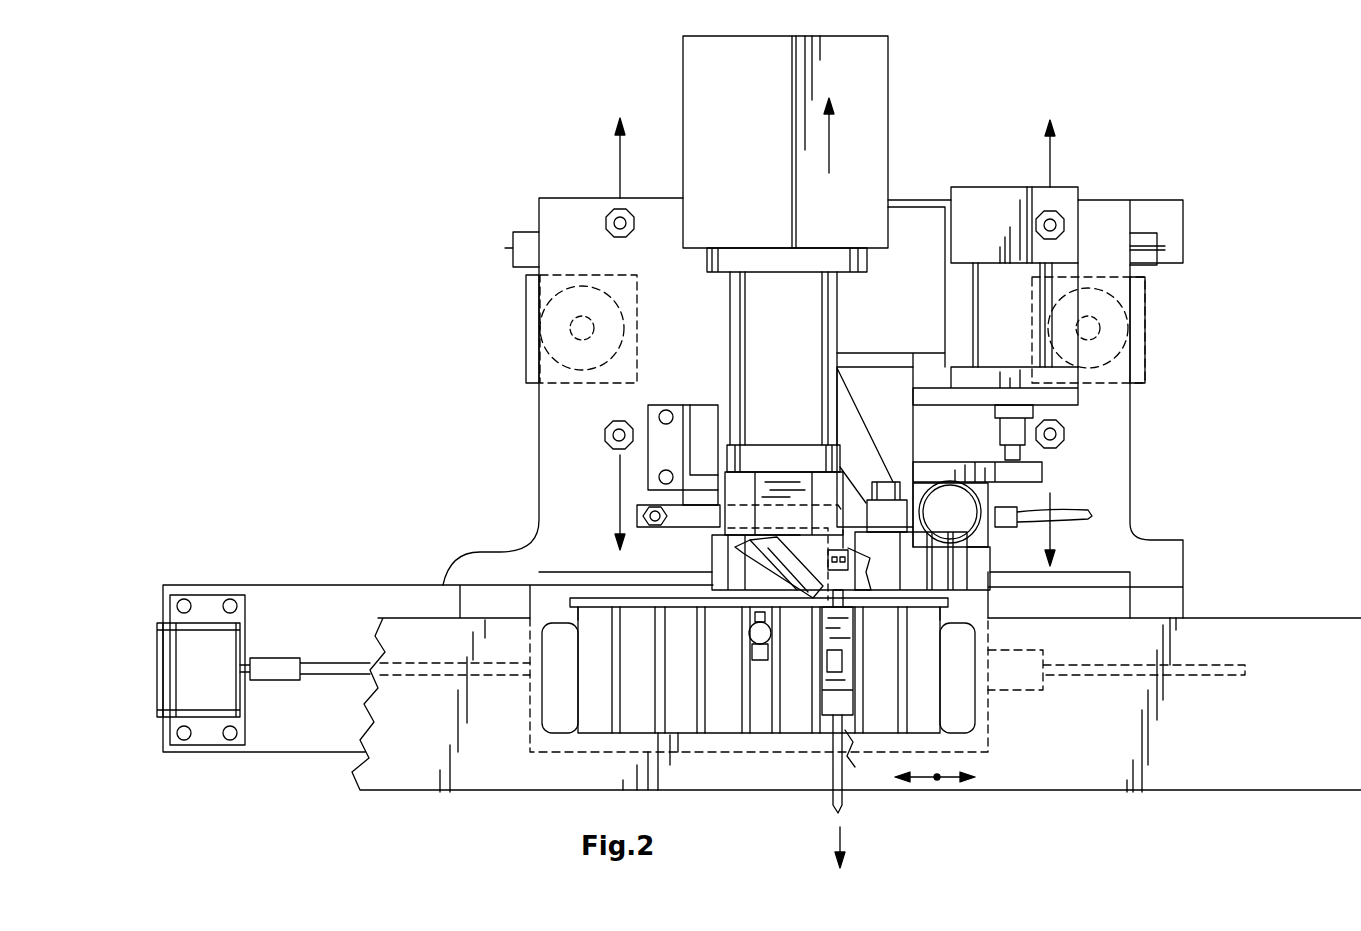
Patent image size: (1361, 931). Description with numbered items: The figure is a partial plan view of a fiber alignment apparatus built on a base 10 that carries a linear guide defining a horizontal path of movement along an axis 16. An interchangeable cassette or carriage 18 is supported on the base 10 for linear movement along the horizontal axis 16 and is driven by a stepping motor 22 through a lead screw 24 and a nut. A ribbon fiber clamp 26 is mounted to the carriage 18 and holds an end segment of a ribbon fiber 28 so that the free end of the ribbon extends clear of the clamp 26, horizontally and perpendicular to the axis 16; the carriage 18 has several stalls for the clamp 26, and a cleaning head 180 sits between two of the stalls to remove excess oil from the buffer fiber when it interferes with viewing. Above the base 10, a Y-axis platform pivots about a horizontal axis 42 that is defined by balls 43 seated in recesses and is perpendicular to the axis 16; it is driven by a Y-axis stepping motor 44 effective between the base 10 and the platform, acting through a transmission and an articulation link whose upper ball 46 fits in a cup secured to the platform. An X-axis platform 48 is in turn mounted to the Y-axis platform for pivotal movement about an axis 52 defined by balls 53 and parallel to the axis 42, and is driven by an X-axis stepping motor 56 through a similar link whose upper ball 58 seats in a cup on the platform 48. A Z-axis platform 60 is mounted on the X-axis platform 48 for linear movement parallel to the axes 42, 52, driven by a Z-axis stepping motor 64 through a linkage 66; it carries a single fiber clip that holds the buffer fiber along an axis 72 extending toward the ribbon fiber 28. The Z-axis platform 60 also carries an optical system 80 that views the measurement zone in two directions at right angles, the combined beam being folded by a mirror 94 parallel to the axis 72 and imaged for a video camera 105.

The base 10 is at (338, 588).
The axis 16 is at (950, 777).
The carriage 18 is at (960, 717).
The stepping motor 22 is at (178, 661).
The lead screw 24 is at (343, 662).
The ribbon fiber clamp 26 is at (832, 695).
The ribbon fiber 28 is at (828, 798).
The horizontal axis 42 is at (618, 163).
The balls 43 is at (628, 223).
The Y-axis stepping motor 44 is at (1147, 367).
The second ball 46 is at (1100, 328).
The X-axis platform 48 is at (1118, 415).
The axis 52 is at (1052, 158).
The balls 53 is at (1038, 225).
The X-axis stepping motor 56 is at (530, 354).
The second ball 58 is at (570, 328).
The Z-axis platform 60 is at (698, 388).
The Z-axis stepping motor 64 is at (993, 187).
The linkage 66 is at (866, 437).
The axis 72 is at (829, 145).
The optical system 80 is at (700, 543).
The mirror 94 is at (783, 590).
The video camera 105 is at (710, 57).
The cleaning head 180 is at (760, 662).